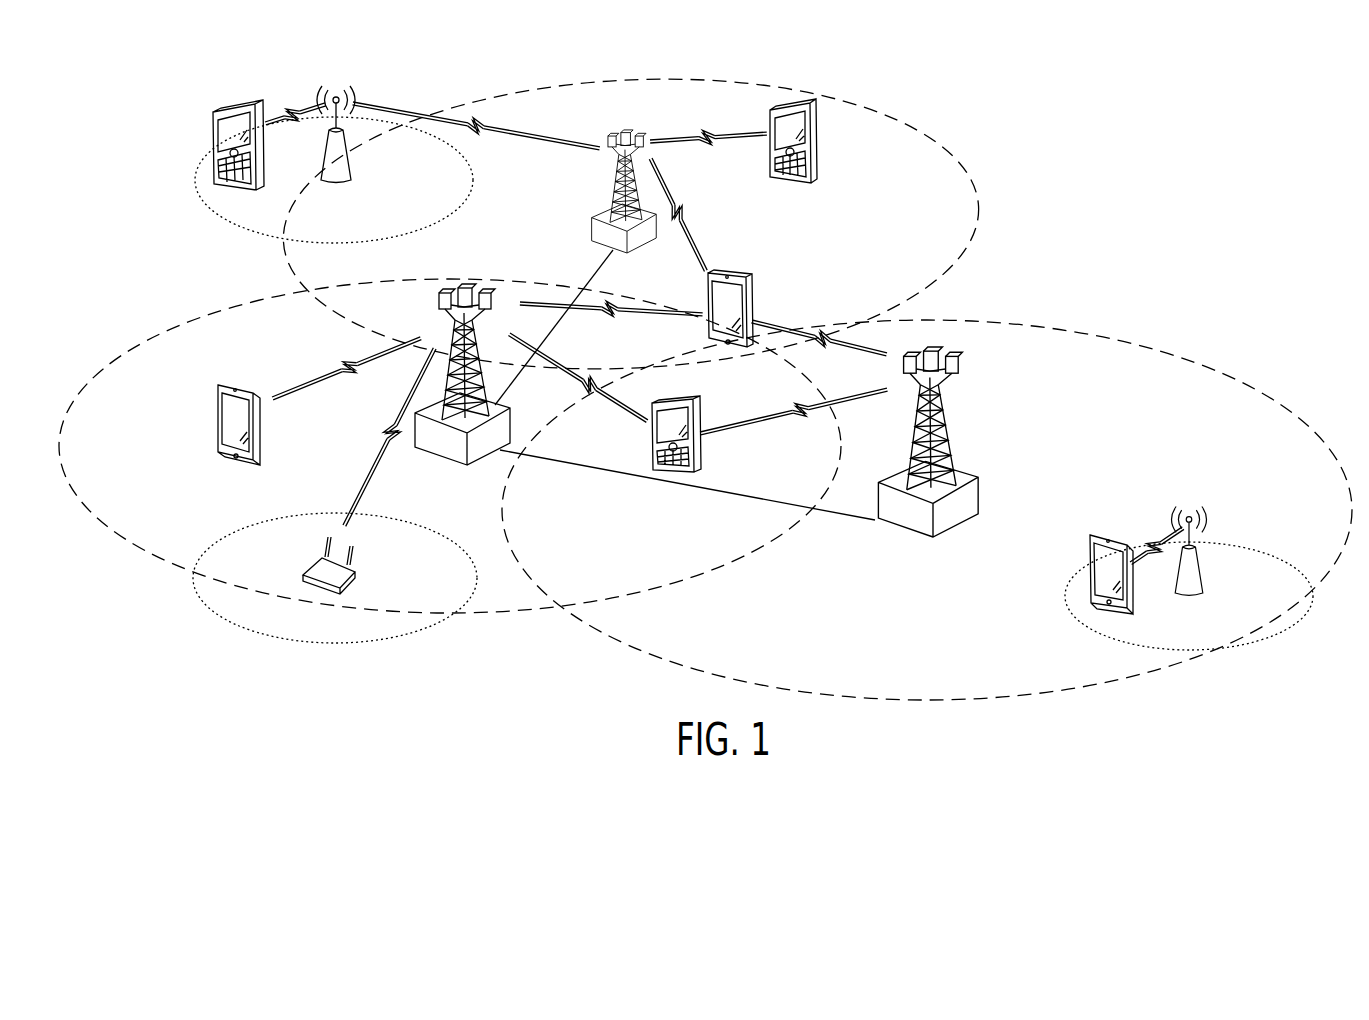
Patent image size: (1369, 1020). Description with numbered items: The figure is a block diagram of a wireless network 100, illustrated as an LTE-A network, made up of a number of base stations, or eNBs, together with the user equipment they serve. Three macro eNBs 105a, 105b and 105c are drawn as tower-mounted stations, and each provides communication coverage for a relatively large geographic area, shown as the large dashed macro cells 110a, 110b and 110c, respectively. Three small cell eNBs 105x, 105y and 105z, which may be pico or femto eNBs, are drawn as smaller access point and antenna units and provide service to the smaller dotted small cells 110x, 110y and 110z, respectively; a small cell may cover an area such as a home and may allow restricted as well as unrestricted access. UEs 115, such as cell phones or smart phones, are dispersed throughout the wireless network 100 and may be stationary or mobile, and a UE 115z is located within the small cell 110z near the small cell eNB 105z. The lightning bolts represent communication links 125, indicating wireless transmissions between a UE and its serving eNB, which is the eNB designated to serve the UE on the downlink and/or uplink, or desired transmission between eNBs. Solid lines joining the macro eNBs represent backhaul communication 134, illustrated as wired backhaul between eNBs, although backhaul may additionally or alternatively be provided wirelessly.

The wireless network 100 is at (1078, 132).
The macro eNB 105a is at (446, 462).
The macro eNB 105b is at (590, 226).
The macro eNB 105c is at (960, 528).
The small cell eNB 105x is at (360, 575).
The small cell eNB 105y is at (352, 180).
The small cell eNB 105z is at (1203, 592).
The macro cell 110a is at (172, 323).
The macro cell 110b is at (816, 97).
The macro cell 110c is at (1132, 333).
The small cell 110x is at (262, 642).
The small cell 110y is at (240, 230).
The small cell 110z is at (1283, 642).
The UE 115 is at (213, 120).
The UE 115z is at (1090, 552).
The communication link 125 is at (284, 110).
The backhaul communication 134 is at (594, 268).